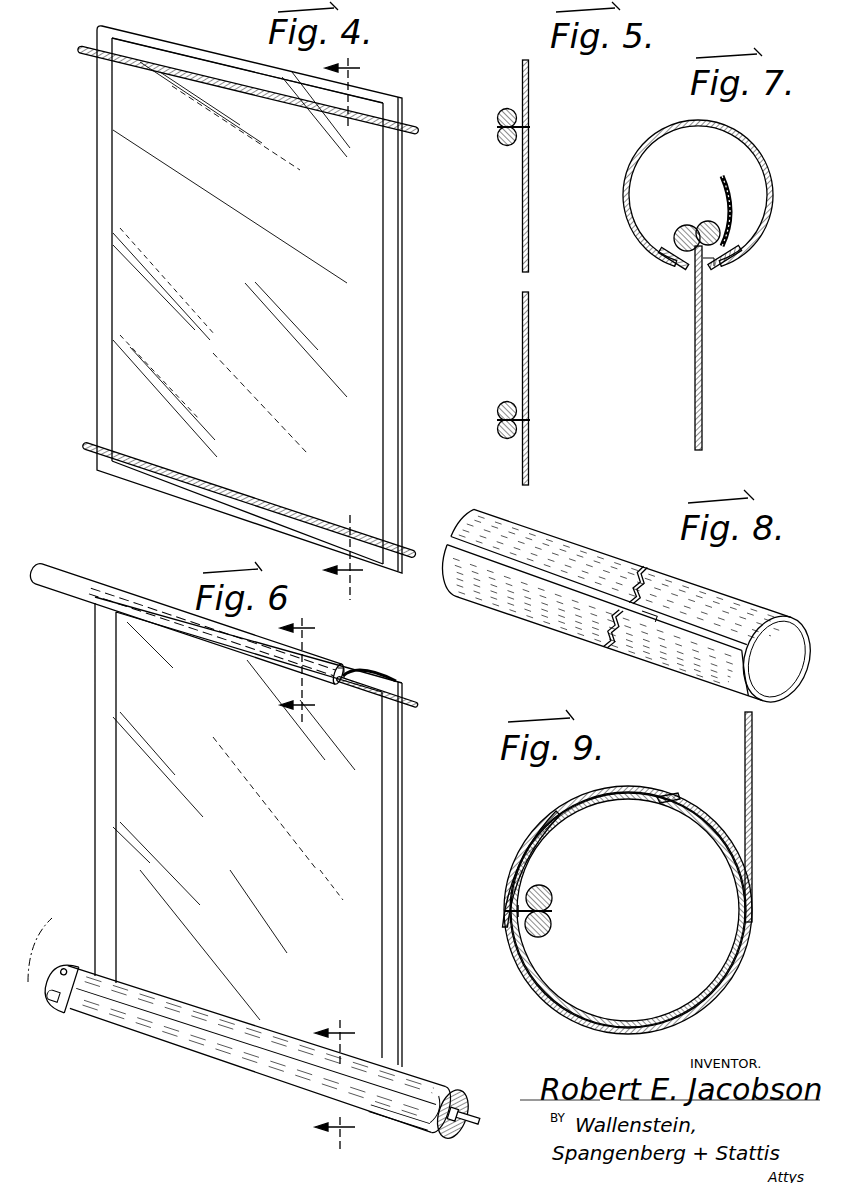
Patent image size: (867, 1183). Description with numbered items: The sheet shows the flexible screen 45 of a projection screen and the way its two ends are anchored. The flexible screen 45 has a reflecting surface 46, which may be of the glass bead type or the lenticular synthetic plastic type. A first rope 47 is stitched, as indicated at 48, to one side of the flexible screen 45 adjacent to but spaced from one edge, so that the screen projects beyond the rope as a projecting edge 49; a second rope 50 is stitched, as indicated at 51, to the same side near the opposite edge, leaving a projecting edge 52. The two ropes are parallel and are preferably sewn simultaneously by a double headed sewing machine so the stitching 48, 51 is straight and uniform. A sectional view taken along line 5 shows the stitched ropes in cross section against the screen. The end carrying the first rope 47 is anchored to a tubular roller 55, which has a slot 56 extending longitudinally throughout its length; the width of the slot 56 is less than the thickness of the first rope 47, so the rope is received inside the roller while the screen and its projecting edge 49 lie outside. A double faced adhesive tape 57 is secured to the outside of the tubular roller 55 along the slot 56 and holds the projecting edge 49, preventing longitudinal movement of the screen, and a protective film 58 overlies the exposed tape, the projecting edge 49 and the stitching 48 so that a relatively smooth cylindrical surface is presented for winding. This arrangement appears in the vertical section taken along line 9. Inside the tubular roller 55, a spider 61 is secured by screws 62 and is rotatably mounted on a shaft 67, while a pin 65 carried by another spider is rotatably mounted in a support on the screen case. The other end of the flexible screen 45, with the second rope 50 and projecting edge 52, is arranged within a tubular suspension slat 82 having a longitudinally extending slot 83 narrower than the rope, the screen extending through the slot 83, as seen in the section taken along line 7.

In FIG. 4, the section line 5— 5 is at (354, 329).
In FIG. 6, the section line 7— 7 is at (307, 670).
In FIG. 6, the section line 9— 9 is at (342, 1087).
In FIG. 4, the flexible screen 45 is at (405, 275).
In FIG. 5, the flexible screen 45 is at (521, 213).
In FIG. 7, the flexible screen 45 is at (703, 328).
In FIG. 6, the flexible screen 45 is at (392, 902).
In FIG. 9, the flexible screen 45 is at (754, 771).
In FIG. 4, the reflecting surface 46 is at (248, 277).
In FIG. 6, the reflecting surface 46 is at (250, 868).
In FIG. 4, the first rope 47 is at (188, 480).
In FIG. 5, the first rope 47 is at (494, 430).
In FIG. 9, the first rope 47 is at (553, 888).
In FIG. 5, the stitching 48 is at (494, 420).
In FIG. 9, the stitching 48 is at (552, 911).
In FIG. 4, the projecting edge 49 is at (235, 508).
In FIG. 5, the projecting edge 49 is at (521, 470).
In FIG. 9, the projecting edge 49 is at (520, 853).
In FIG. 4, the second rope 50 is at (150, 50).
In FIG. 5, the second rope 50 is at (504, 141).
In FIG. 7, the second rope 50 is at (680, 227).
In FIG. 6, the second rope 50 is at (360, 685).
In FIG. 5, the stitching 51 is at (496, 128).
In FIG. 7, the stitching 51 is at (700, 214).
In FIG. 4, the projecting edge 52 is at (199, 60).
In FIG. 5, the projecting edge 52 is at (521, 74).
In FIG. 7, the projecting edge 52 is at (730, 194).
In FIG. 6, the projecting edge 52 is at (401, 678).
In FIG. 8, the tubular roller 55 is at (594, 546).
In FIG. 6, the tubular roller 55 is at (402, 1132).
In FIG. 9, the tubular roller 55 is at (553, 973).
In FIG. 8, the slot 56 is at (531, 570).
In FIG. 6, the slot 56 is at (65, 1013).
In FIG. 9, the slot 56 is at (527, 930).
In FIG. 9, the double faced adhesive tape 57 is at (562, 828).
In FIG. 6, the protective film 58 is at (208, 1042).
In FIG. 9, the protective film 58 is at (528, 838).
In FIG. 6, the spider 61 is at (458, 1140).
In FIG. 6, the screws 62 is at (60, 967).
In FIG. 6, the pin 65 is at (53, 939).
In FIG. 6, the shaft 67 is at (476, 1122).
In FIG. 7, the tubular suspension slat 82 is at (657, 136).
In FIG. 6, the tubular suspension slat 82 is at (118, 600).
In FIG. 7, the slot 83 is at (708, 264).
In FIG. 6, the slot 83 is at (347, 682).